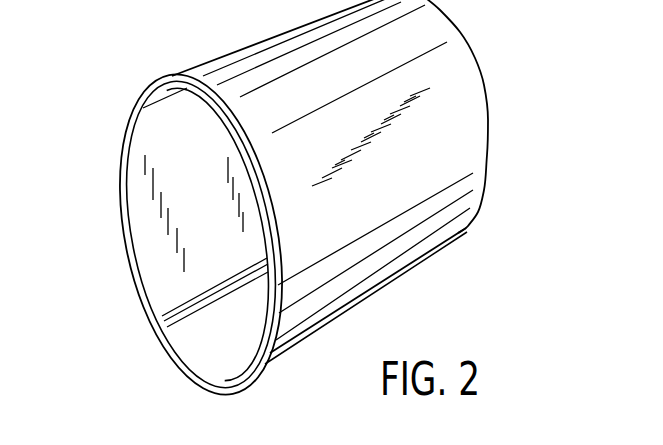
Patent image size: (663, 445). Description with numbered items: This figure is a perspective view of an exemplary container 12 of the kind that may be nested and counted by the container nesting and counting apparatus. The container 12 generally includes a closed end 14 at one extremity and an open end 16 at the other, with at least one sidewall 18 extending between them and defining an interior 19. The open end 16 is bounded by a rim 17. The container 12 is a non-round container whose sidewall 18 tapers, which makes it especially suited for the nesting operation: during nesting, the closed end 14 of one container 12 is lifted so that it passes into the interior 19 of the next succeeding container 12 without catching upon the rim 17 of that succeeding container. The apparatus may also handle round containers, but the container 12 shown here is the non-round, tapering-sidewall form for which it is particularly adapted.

The container 12 is at (110, 78).
The closed end 14 is at (488, 89).
The open end 16 is at (149, 253).
The rim 17 is at (124, 182).
The sidewall 18 is at (417, 262).
The interior 19 is at (233, 252).